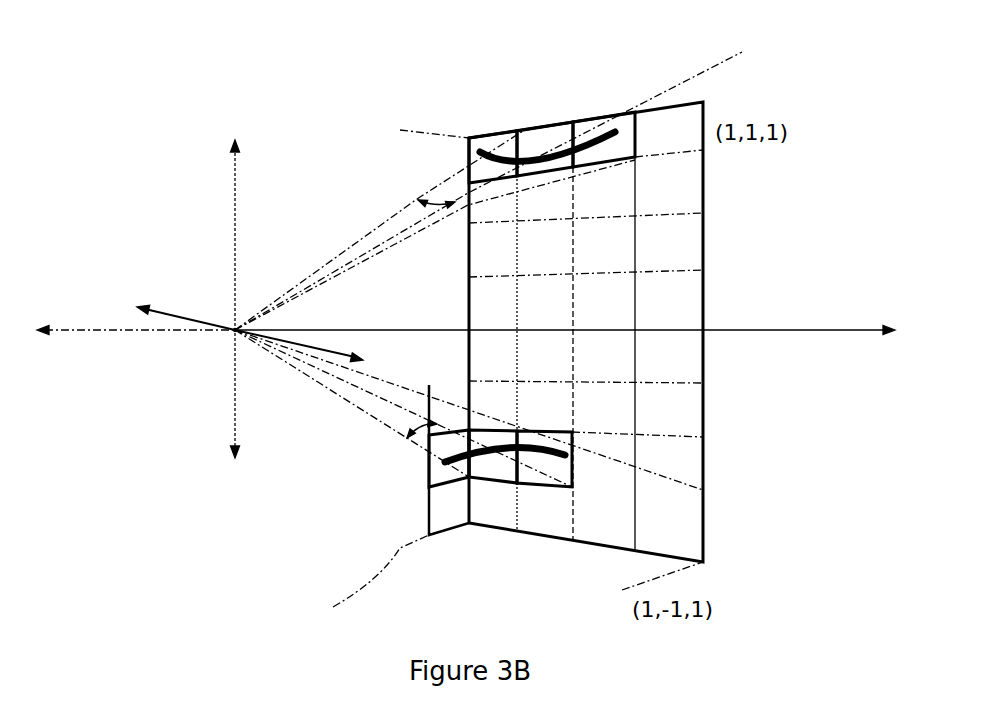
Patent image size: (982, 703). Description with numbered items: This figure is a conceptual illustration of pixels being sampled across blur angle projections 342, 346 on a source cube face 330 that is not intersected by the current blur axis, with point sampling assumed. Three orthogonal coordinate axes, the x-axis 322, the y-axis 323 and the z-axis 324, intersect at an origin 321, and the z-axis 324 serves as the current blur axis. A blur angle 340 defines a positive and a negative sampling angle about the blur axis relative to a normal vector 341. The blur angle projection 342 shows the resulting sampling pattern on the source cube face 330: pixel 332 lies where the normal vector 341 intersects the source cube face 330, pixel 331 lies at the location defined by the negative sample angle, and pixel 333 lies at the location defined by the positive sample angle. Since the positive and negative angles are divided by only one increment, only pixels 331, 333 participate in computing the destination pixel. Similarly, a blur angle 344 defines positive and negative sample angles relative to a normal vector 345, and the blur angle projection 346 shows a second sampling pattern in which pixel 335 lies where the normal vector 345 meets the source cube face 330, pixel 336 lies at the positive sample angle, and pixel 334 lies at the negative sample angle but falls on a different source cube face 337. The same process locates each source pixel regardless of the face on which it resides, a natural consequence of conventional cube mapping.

The origin 321 is at (223, 310).
The x-axis 322 is at (185, 318).
The y-axis 323 is at (868, 326).
The z-axis 324 is at (235, 417).
The source cube face 330 is at (703, 423).
The source pixel 331 is at (480, 133).
The source pixel 332 is at (537, 123).
The source pixel 333 is at (585, 113).
The source pixel 334 is at (447, 488).
The source pixel 335 is at (488, 487).
The source pixel 336 is at (538, 488).
The source cube face 337 is at (351, 531).
The blur angle 340 is at (437, 192).
The normal vector 341 is at (410, 232).
The blur angle projection 342 is at (670, 85).
The blur angle 344 is at (412, 424).
The normal vector 345 is at (387, 398).
The blur angle projection 346 is at (527, 452).